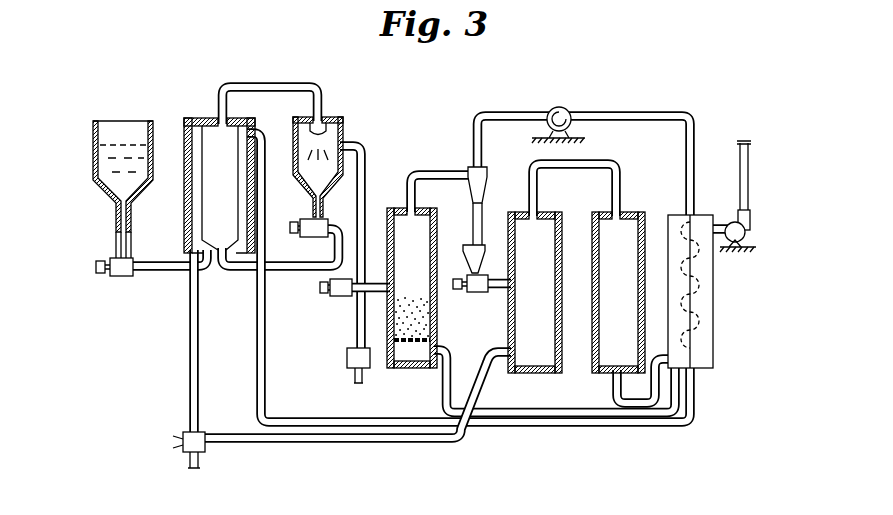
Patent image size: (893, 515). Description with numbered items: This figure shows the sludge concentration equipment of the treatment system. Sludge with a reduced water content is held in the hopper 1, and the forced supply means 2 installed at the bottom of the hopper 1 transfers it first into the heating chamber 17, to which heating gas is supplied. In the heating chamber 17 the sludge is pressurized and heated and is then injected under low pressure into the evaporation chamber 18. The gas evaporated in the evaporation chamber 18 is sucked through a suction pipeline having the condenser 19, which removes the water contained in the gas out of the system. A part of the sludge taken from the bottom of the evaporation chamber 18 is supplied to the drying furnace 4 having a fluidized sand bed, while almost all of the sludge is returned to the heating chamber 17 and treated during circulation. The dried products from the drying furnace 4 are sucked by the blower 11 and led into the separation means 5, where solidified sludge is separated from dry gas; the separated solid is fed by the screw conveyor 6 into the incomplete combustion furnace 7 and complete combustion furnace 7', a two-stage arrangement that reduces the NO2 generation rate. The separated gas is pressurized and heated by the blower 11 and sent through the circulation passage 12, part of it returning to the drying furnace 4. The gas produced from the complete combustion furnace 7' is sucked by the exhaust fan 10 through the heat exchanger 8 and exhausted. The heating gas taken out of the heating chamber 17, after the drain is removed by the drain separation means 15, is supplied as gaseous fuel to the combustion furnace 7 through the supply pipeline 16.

The hopper 1 is at (124, 130).
The forced supply means 2 is at (116, 278).
The drying furnace 4 is at (397, 207).
The separation means 5 is at (470, 166).
The screw conveyor 6 is at (465, 250).
The incomplete combustion furnace 7 is at (535, 270).
The complete combustion furnace 7' is at (611, 275).
The heat exchanger 8 is at (678, 213).
The exhaust fan 10 is at (734, 212).
The blower 11 is at (567, 107).
The circulation passage 12 is at (653, 110).
The drain separation means 15 is at (183, 432).
The supply pipeline 16 is at (486, 388).
The heating chamber 17 is at (200, 118).
The evaporation chamber 18 is at (330, 117).
The condenser 19 is at (347, 364).